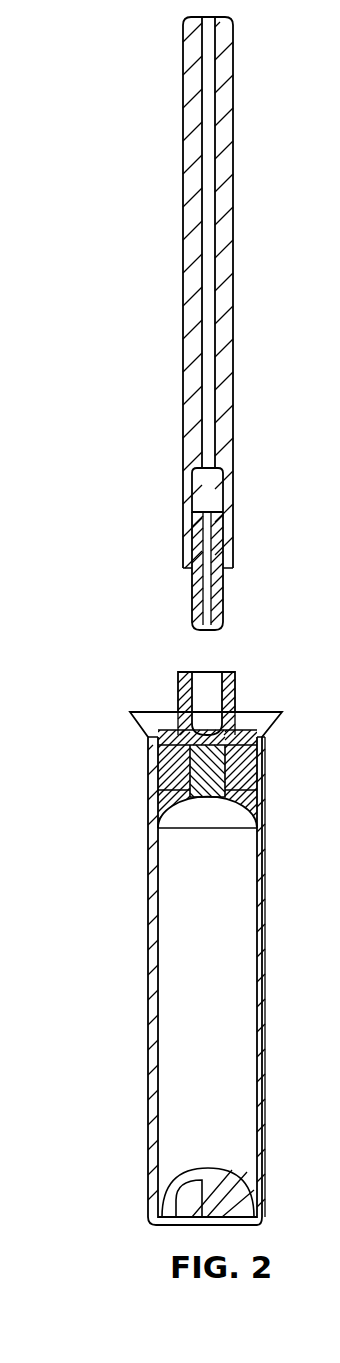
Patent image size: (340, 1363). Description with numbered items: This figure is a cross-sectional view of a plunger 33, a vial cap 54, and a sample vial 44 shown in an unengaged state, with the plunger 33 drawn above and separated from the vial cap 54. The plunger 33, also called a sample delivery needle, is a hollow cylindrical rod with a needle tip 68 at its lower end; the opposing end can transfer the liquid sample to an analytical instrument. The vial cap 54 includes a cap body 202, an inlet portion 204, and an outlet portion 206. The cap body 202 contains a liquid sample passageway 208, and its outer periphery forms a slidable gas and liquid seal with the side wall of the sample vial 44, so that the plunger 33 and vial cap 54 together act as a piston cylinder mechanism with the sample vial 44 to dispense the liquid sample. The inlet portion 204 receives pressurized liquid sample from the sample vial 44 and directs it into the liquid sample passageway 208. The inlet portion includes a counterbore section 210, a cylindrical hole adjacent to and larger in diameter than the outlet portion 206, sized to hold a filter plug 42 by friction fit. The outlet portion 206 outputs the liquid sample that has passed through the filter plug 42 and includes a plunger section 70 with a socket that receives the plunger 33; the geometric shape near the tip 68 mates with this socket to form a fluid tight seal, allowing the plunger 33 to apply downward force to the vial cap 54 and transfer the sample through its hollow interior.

The plunger 33 is at (233, 284).
The needle tip 68 is at (222, 632).
The plunger section 70 is at (236, 690).
The outlet portion 206 is at (207, 676).
The sample vial 44 is at (265, 1000).
The filter plug 42 is at (259, 791).
The liquid sample passageway 208 is at (205, 757).
The cap body 202 is at (162, 775).
The counterbore section 210 is at (232, 752).
The vial cap 54 is at (228, 822).
The inlet portion 204 is at (206, 819).